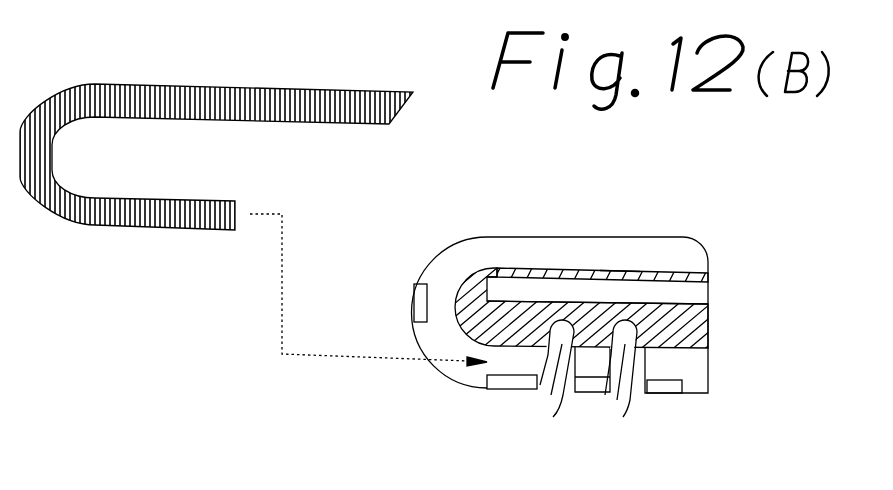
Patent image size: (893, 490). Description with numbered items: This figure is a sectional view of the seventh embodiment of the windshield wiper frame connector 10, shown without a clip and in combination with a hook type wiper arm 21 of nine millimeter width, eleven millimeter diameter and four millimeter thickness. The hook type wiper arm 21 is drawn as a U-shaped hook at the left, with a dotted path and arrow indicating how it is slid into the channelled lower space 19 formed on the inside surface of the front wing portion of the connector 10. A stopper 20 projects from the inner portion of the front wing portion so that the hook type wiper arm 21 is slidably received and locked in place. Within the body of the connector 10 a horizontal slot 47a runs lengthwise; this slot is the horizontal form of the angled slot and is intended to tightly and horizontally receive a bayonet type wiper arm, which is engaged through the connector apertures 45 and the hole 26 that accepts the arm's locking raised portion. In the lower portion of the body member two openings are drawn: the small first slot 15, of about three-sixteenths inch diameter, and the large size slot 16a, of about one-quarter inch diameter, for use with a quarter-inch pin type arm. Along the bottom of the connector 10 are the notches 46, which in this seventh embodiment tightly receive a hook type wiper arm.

The first hook type wiper arm 21 is at (137, 85).
The windshield wiper frame connector 10 is at (666, 236).
The lower space 19 is at (450, 340).
The stoppers 20 is at (414, 301).
The connector apertures 45 is at (516, 268).
The hole 26 is at (610, 273).
The horizontal slot 47a is at (697, 297).
The first slot 15 is at (540, 385).
The large size slot 16a is at (605, 395).
The notches 46 is at (497, 388).